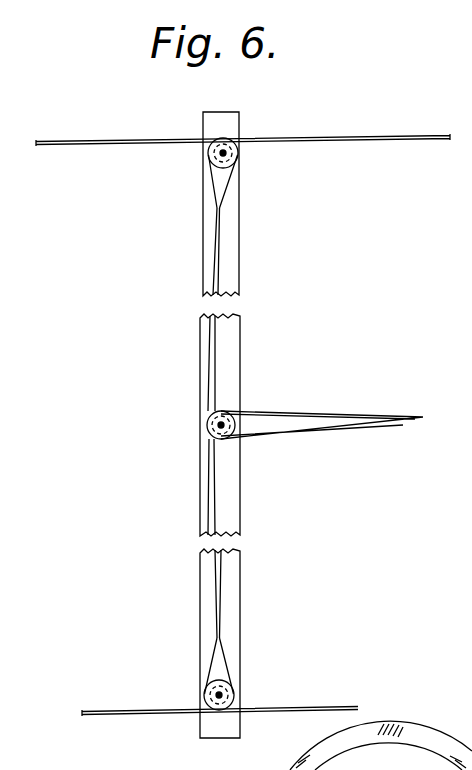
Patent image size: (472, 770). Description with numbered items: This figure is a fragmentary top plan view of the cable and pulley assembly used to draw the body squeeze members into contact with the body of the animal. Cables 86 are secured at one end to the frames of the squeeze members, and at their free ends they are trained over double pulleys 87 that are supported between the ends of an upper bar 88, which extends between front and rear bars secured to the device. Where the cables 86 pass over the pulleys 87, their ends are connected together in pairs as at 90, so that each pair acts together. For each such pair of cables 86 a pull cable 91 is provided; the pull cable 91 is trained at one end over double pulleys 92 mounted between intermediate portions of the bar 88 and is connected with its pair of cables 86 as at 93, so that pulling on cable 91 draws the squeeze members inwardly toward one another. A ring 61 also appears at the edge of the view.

The drum 61 is at (418, 734).
The cables 86 is at (132, 141).
The double pulleys 87 is at (237, 138).
The upper bar 88 is at (236, 364).
The cable connection 90 is at (229, 186).
The pull cable 91 is at (327, 412).
The double pulleys 92 is at (212, 434).
The cable connection 93 is at (217, 210).